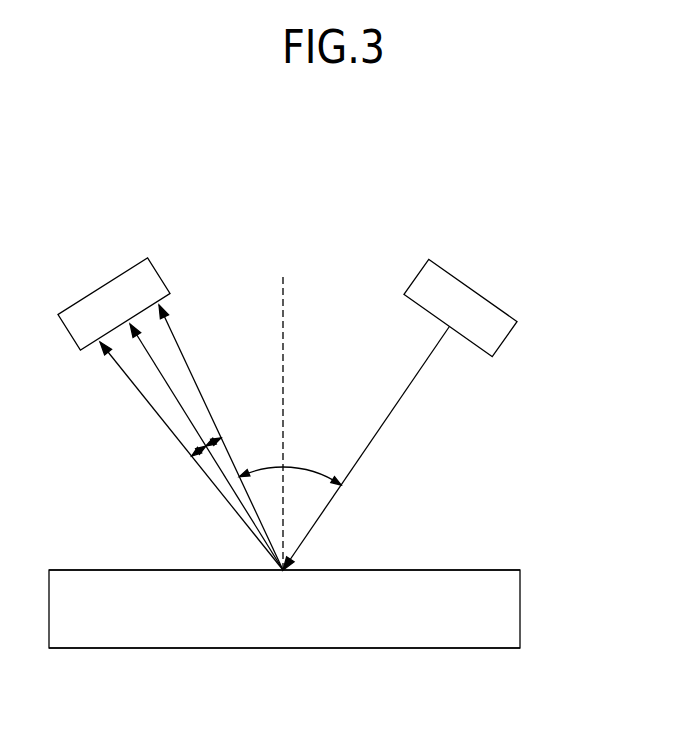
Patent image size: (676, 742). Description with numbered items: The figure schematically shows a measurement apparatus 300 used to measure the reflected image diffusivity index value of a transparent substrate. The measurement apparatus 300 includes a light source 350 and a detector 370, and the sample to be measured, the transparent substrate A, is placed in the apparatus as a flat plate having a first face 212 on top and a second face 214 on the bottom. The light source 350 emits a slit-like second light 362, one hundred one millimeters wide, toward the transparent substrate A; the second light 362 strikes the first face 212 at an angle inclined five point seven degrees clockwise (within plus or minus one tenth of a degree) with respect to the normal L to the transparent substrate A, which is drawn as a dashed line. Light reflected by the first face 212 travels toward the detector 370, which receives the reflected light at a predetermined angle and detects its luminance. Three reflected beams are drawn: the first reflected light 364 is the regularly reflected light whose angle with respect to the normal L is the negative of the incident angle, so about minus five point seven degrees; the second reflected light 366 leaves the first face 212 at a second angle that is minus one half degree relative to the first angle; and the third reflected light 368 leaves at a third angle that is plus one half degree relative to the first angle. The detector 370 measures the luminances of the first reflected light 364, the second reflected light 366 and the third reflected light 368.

The measurement apparatus 300 is at (586, 215).
The light source 350 is at (481, 299).
The second light 362 is at (398, 405).
The first reflected light 364 is at (152, 368).
The second reflected light 366 is at (177, 340).
The third reflected light 368 is at (150, 410).
The detector 370 is at (100, 283).
The first face 212 is at (480, 570).
The second face 214 is at (480, 648).
The transparent substrate A is at (520, 606).
The normal L is at (285, 291).